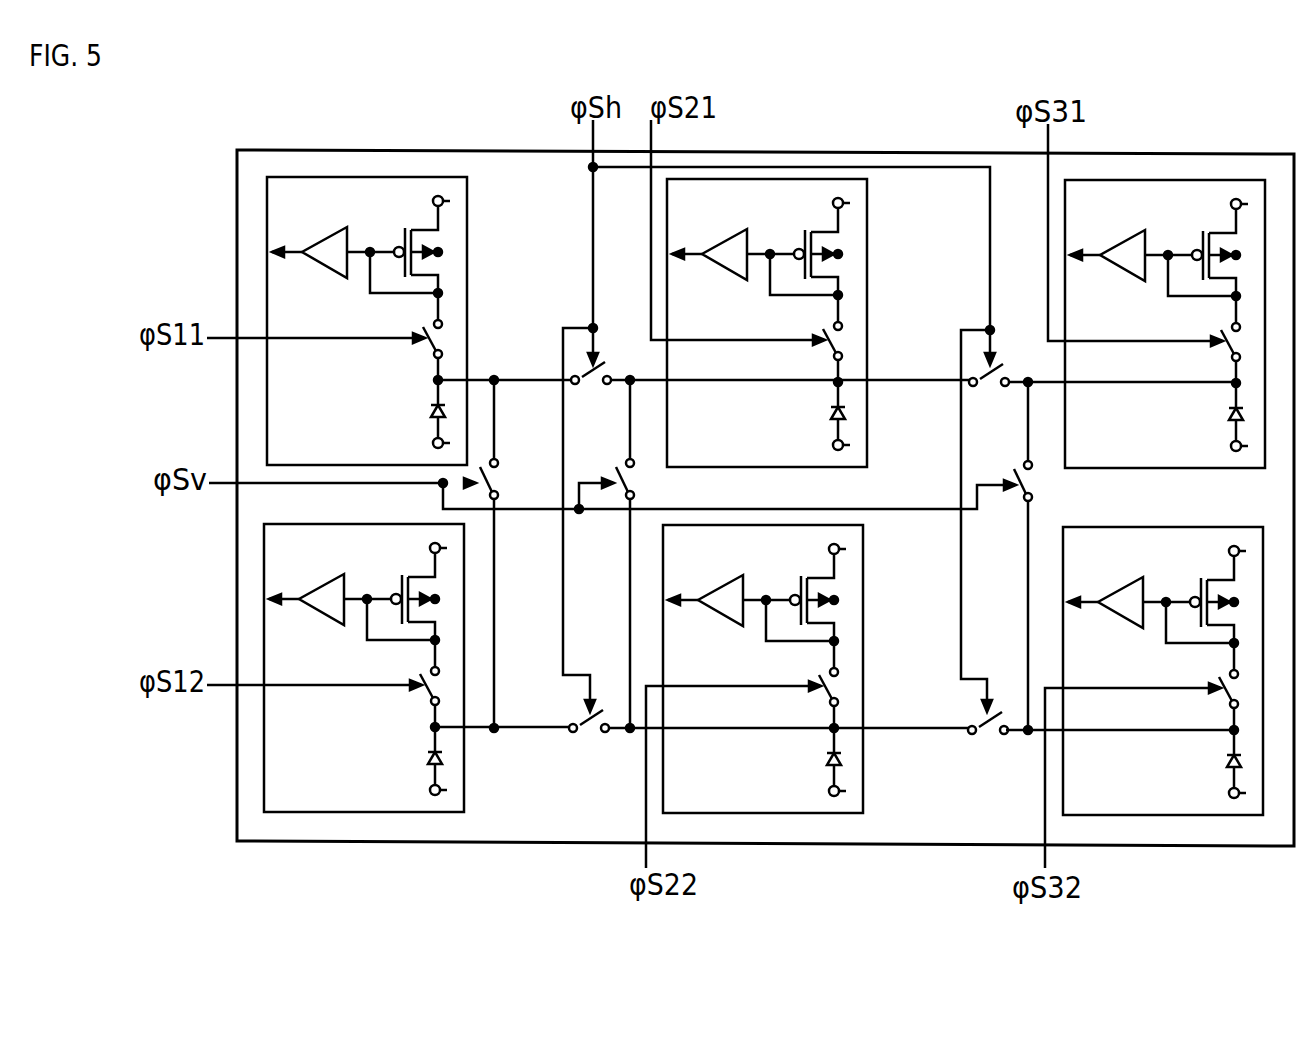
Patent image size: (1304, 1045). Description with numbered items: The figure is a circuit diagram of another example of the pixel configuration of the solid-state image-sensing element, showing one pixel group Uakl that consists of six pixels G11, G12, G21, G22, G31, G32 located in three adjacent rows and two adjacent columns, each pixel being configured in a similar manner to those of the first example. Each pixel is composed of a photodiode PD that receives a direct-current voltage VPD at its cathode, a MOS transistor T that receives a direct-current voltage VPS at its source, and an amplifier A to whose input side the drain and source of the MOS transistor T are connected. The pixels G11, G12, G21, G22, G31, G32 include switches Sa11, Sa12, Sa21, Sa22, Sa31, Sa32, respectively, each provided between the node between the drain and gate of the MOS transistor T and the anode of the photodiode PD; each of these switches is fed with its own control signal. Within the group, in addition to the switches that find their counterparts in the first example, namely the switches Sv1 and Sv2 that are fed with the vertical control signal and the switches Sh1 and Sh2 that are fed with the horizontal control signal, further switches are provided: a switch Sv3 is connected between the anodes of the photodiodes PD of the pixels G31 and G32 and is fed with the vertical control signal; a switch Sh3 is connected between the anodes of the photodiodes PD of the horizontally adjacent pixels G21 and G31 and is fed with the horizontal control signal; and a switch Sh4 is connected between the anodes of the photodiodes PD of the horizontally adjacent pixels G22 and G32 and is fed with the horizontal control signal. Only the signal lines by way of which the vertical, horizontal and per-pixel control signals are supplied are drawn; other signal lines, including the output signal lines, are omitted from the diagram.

The pixel group Uakl is at (765, 498).
The pixel G11 is at (367, 321).
The pixel G12 is at (364, 668).
The pixel G21 is at (767, 323).
The pixel G22 is at (763, 669).
The pixel G31 is at (1165, 324).
The pixel G32 is at (1163, 671).
The switch Sa11 is at (406, 362).
The switch Sa12 is at (403, 709).
The switch Sa21 is at (806, 364).
The switch Sa22 is at (802, 710).
The switch Sa31 is at (1204, 365).
The switch Sa32 is at (1202, 712).
The switch Sh1 is at (596, 389).
The switch Sh2 is at (595, 737).
The switch Sh3 is at (995, 391).
The switch Sh4 is at (994, 738).
The switch Sv1 is at (514, 554).
The switch Sv2 is at (652, 554).
The switch Sv3 is at (1049, 556).
The photodiode PD is at (818, 590).
The direct-current voltage VPD is at (810, 619).
The direct-current voltage VPS is at (810, 374).
The MOS transistor T is at (808, 438).
The amplifier A is at (730, 438).